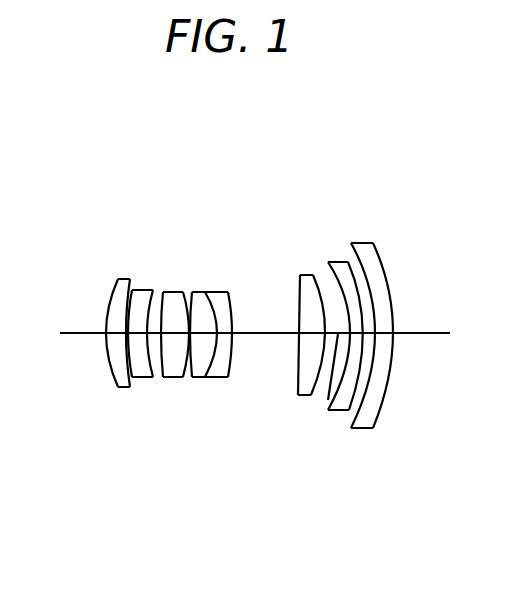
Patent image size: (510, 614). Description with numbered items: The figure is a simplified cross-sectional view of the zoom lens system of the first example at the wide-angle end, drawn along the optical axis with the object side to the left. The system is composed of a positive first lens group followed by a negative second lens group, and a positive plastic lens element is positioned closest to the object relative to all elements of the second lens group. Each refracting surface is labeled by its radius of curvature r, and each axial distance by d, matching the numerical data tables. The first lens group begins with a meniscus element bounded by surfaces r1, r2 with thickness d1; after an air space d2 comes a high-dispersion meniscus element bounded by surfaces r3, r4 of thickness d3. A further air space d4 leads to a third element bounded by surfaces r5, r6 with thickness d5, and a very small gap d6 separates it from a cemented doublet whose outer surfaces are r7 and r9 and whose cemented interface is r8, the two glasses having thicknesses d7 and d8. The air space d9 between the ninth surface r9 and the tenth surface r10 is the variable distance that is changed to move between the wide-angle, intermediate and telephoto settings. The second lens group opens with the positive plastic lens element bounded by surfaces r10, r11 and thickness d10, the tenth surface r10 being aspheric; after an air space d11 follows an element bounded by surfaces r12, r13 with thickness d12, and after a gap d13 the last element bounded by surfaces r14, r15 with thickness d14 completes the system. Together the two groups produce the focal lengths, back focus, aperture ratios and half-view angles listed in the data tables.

The radius of curvature of first lens surface r1 is at (118, 279).
The radius of curvature of second lens surface r2 is at (130, 279).
The radius of curvature of third lens surface r3 is at (132, 290).
The radius of curvature of fourth lens surface r4 is at (153, 290).
The radius of curvature of fifth lens surface r5 is at (163, 292).
The radius of curvature of sixth lens surface r6 is at (183, 292).
The radius of curvature of seventh lens surface r7 is at (192, 292).
The radius of curvature of eighth lens surface r8 is at (205, 292).
The radius of curvature of ninth lens surface r9 is at (228, 292).
The radius of curvature of tenth lens surface r10 is at (300, 275).
The radius of curvature of eleventh lens surface r11 is at (312, 275).
The radius of curvature of twelfth lens surface r12 is at (328, 262).
The radius of curvature of thirteenth lens surface r13 is at (349, 262).
The radius of curvature of fourteenth lens surface r14 is at (351, 243).
The radius of curvature of fifteenth lens surface r15 is at (373, 243).
The axial thickness of first lens element d1 is at (110, 336).
The air space between second and third surfaces d2 is at (125, 336).
The axial thickness of second lens element d3 is at (142, 336).
The air space between fourth and fifth surfaces d4 is at (160, 336).
The axial thickness of third lens element d5 is at (177, 336).
The air space between sixth and seventh surfaces d6 is at (189, 336).
The axial thickness of first element of cemented doublet d7 is at (205, 336).
The axial thickness of second element of cemented doublet d8 is at (223, 336).
The variable air space between first and second lens groups d9 is at (270, 336).
The axial thickness of positive plastic lens element d10 is at (307, 336).
The air space between eleventh and twelfth surfaces d11 is at (315, 336).
The axial thickness of second element of second lens group d12 is at (355, 336).
The air space between thirteenth and fourteenth surfaces d13 is at (368, 336).
The axial thickness of last lens element d14 is at (385, 336).